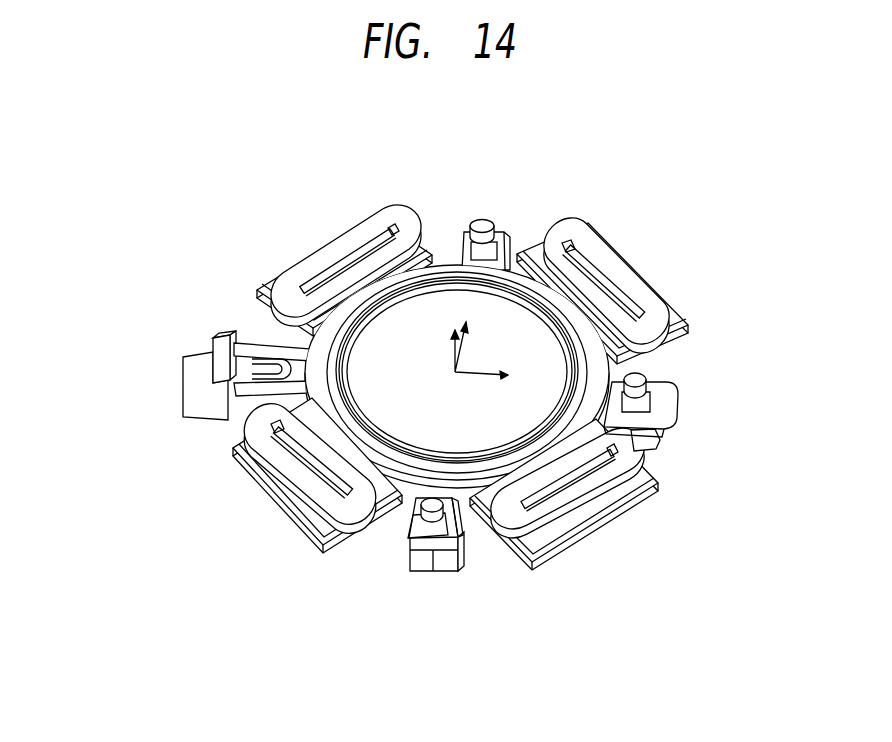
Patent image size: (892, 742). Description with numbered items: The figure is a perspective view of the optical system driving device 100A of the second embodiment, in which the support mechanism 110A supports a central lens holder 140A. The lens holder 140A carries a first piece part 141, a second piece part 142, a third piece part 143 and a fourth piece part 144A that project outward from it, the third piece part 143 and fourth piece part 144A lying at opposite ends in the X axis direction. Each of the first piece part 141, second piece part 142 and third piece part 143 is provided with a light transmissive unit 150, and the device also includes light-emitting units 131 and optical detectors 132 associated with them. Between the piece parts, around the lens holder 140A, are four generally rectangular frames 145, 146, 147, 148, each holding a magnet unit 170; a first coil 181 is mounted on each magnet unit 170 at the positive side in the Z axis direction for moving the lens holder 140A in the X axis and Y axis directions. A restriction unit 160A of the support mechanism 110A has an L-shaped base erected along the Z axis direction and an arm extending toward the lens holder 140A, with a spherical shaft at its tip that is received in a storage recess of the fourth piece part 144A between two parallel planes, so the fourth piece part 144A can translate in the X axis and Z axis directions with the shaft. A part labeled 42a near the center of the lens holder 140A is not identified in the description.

The optical system driving device 100A is at (484, 110).
The support mechanism 110A is at (506, 170).
The rotor 42a is at (438, 302).
The light-emitting unit 131 is at (481, 221).
The optical detector 132 is at (648, 437).
The lens holder 140A is at (522, 258).
The first piece part 141 is at (511, 233).
The second piece part 142 is at (406, 552).
The third piece part 143 is at (679, 392).
The fourth piece part 144A is at (250, 344).
The frame 145 is at (662, 292).
The frame 146 is at (593, 530).
The frame 147 is at (252, 480).
The frame 148 is at (259, 287).
The light transmissive unit 150 is at (497, 230).
The restriction unit 160A is at (206, 341).
The magnet unit 170 is at (682, 318).
The first coil 181 is at (336, 247).